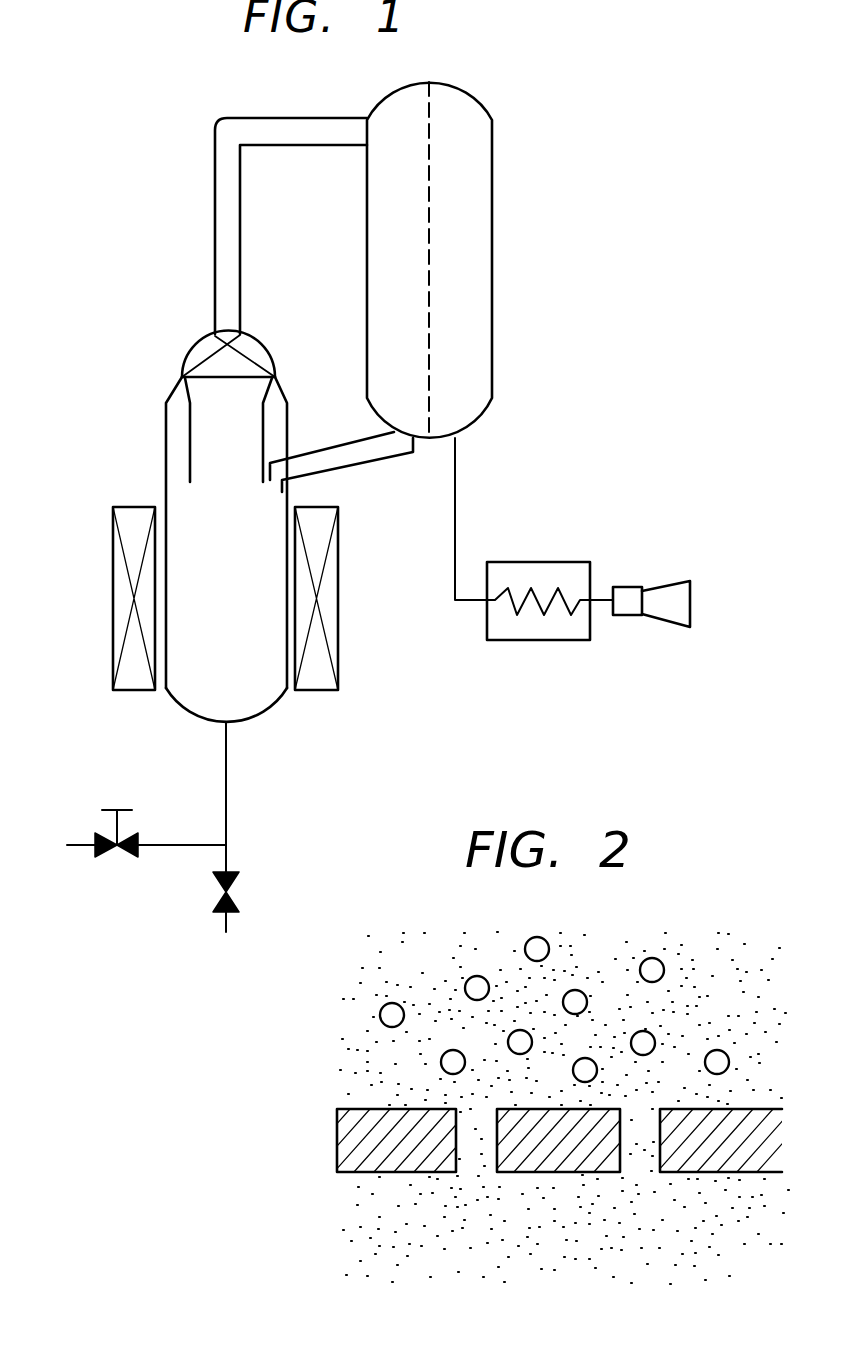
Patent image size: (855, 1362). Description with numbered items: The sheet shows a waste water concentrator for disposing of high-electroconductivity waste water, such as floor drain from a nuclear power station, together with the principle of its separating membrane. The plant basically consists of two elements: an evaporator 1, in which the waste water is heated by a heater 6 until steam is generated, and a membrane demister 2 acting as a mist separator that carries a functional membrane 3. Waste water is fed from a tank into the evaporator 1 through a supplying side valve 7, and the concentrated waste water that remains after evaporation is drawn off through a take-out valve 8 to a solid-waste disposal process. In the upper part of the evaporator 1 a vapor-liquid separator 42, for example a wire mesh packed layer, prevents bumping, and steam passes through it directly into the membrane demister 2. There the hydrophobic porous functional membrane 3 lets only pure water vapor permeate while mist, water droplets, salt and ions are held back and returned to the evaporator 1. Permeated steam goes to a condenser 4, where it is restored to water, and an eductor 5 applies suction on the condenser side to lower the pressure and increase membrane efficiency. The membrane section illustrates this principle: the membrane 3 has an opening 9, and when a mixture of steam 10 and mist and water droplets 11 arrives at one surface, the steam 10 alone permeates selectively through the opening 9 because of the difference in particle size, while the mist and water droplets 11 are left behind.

In FIG. 1, the evaporator 1 is at (166, 440).
In FIG. 1, the membrane demister 2 is at (458, 88).
In FIG. 1, the functional membrane 3 is at (430, 250).
In FIG. 2, the functional membrane 3 is at (337, 1118).
In FIG. 1, the condenser 4 is at (540, 562).
In FIG. 1, the eductor 5 is at (672, 588).
In FIG. 1, the heater 6 is at (340, 555).
In FIG. 1, the supplying side valve 7 is at (124, 855).
In FIG. 1, the take-out valve 8 is at (240, 880).
In FIG. 2, the opening 9 is at (648, 1153).
In FIG. 2, the steam 10 is at (440, 982).
In FIG. 2, the mist and water droplets 11 is at (528, 938).
In FIG. 1, the vapor-liquid separator 42 is at (200, 352).